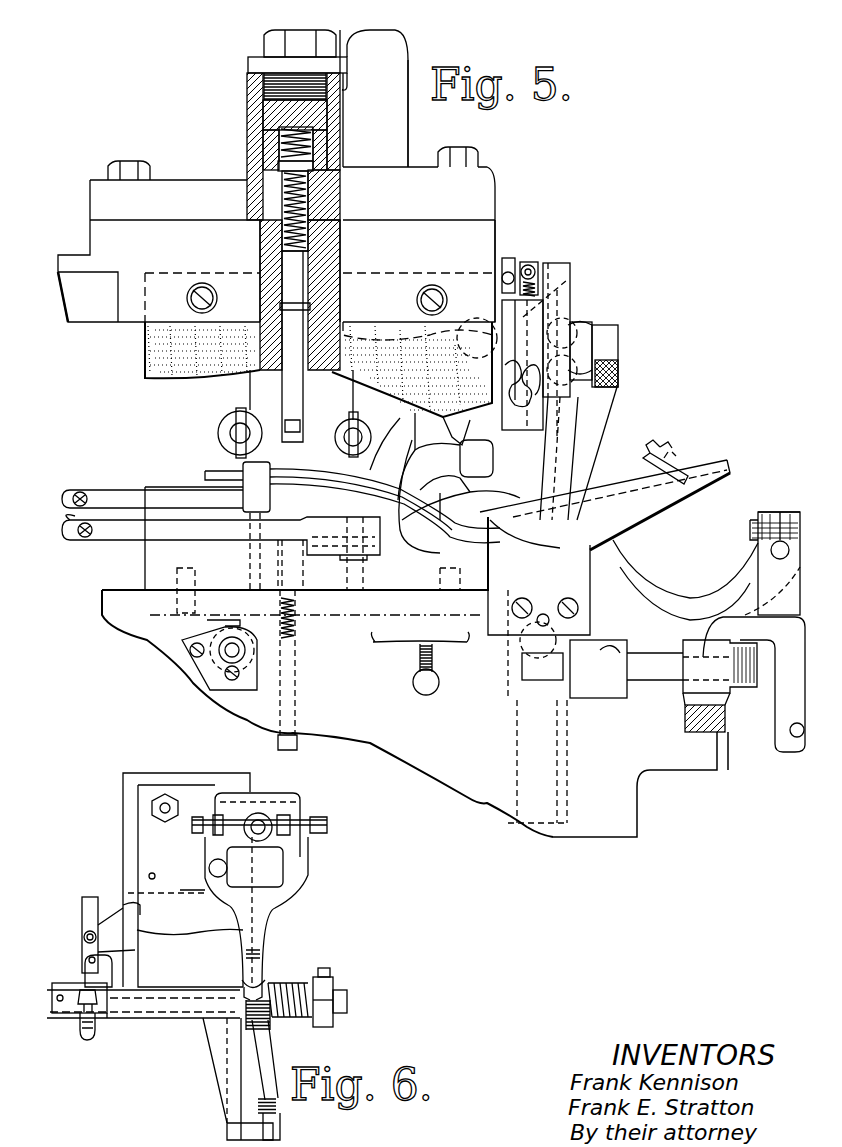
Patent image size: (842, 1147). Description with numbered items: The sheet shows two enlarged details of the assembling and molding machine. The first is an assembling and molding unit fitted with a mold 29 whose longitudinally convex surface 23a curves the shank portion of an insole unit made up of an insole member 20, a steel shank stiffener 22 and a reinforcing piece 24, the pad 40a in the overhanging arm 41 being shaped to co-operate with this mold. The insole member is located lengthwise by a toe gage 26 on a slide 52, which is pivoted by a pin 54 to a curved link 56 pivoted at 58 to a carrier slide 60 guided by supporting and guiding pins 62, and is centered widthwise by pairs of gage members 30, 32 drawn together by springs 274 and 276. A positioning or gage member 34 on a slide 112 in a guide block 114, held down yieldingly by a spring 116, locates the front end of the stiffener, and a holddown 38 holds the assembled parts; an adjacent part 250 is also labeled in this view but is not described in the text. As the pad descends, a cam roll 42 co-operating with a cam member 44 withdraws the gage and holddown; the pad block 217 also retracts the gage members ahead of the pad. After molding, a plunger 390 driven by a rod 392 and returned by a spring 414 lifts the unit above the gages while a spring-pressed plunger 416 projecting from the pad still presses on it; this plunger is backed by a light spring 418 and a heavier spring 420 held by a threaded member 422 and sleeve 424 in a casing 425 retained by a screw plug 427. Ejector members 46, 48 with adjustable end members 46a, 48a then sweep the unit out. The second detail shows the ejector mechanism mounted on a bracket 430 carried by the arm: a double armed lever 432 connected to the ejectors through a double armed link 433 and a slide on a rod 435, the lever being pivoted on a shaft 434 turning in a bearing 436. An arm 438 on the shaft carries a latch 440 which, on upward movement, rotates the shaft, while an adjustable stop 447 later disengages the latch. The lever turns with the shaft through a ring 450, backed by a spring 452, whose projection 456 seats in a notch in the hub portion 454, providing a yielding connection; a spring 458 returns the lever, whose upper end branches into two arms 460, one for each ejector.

In FIG. 5, the screw plug 427 is at (272, 85).
In FIG. 5, the threaded member 422 is at (280, 110).
In FIG. 5, the heavier spring 420 is at (282, 143).
In FIG. 5, the casing 425 is at (274, 165).
In FIG. 5, the sleeve 424 is at (262, 185).
In FIG. 5, the light spring 418 is at (296, 200).
In FIG. 5, the spring-pressed plunger 416 is at (290, 386).
In FIG. 5, the overhanging arm 41 is at (400, 130).
In FIG. 5, the pad block 217 is at (487, 230).
In FIG. 5, the pad 40a is at (152, 352).
In FIG. 5, the cam roll 42 is at (430, 340).
In FIG. 5, the cam member 44 is at (440, 404).
In FIG. 5, the ejector member 46 is at (228, 428).
In FIG. 5, the work engaging end member 46a is at (238, 440).
In FIG. 5, the ejector member 48 is at (349, 432).
In FIG. 5, the work engaging end member 48a is at (357, 448).
In FIG. 5, the insole member 20 is at (310, 498).
In FIG. 5, the steel shank stiffener 22 is at (372, 492).
In FIG. 5, the reinforcing piece 24 is at (393, 476).
In FIG. 5, the gage member 30 is at (272, 464).
In FIG. 5, the gage member 32 is at (412, 465).
In FIG. 5, the holddown 38 is at (455, 490).
In FIG. 5, the mold 29 is at (168, 490).
In FIG. 5, the spring 274 is at (80, 490).
In FIG. 5, the spring 276 is at (78, 533).
In FIG. 5, the plunger 390 is at (285, 565).
In FIG. 5, the spring 414 is at (300, 640).
In FIG. 5, the rod 392 is at (296, 745).
In FIG. 5, the longitudinally convex surface 23a is at (398, 556).
In FIG. 5, the positioning or gage member 34 is at (480, 580).
In FIG. 5, the spring 116 is at (546, 275).
In FIG. 5, the bar or slide 112 is at (517, 350).
In FIG. 5, the guide block 114 is at (523, 347).
In FIG. 5, the rod 250 is at (603, 410).
In FIG. 5, the pin 54 is at (622, 512).
In FIG. 5, the slide 52 is at (645, 470).
In FIG. 5, the toe gage 26 is at (668, 455).
In FIG. 5, the curved link 56 is at (650, 578).
In FIG. 5, the pivot 58 is at (772, 556).
In FIG. 5, the supporting and guiding pin 62 is at (650, 665).
In FIG. 5, the carrier slide 60 is at (720, 698).
In FIG. 6, the bracket 430 is at (180, 795).
In FIG. 6, the double armed link 433 is at (225, 795).
In FIG. 6, the arm 460 is at (208, 872).
In FIG. 6, the rod 435 is at (270, 840).
In FIG. 6, the double armed lever 432 is at (263, 935).
In FIG. 6, the latch 440 is at (80, 915).
In FIG. 6, the adjustable stop 447 is at (112, 962).
In FIG. 6, the arm 438 is at (62, 985).
In FIG. 6, the shaft 434 is at (52, 1003).
In FIG. 6, the bearing 436 is at (130, 1018).
In FIG. 6, the hub portion 454 is at (262, 985).
In FIG. 6, the ring 450 is at (285, 980).
In FIG. 6, the spring 452 is at (330, 975).
In FIG. 6, the projection 456 is at (268, 1015).
In FIG. 6, the spring 458 is at (278, 1112).